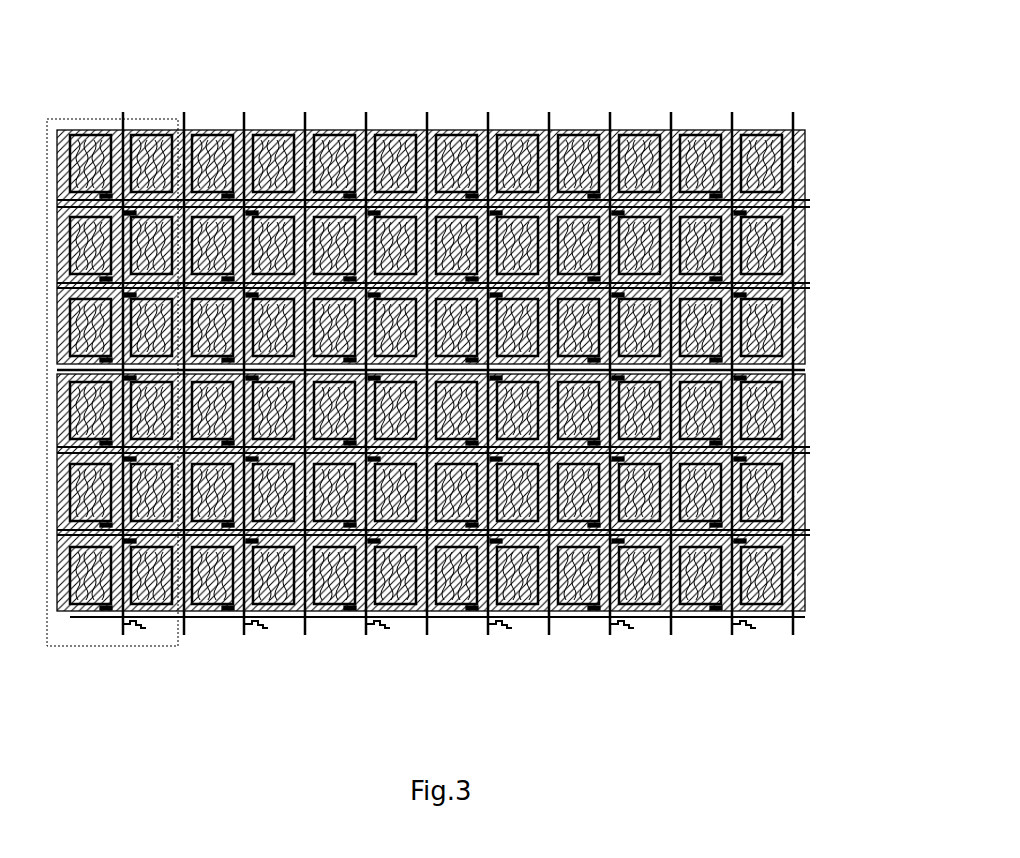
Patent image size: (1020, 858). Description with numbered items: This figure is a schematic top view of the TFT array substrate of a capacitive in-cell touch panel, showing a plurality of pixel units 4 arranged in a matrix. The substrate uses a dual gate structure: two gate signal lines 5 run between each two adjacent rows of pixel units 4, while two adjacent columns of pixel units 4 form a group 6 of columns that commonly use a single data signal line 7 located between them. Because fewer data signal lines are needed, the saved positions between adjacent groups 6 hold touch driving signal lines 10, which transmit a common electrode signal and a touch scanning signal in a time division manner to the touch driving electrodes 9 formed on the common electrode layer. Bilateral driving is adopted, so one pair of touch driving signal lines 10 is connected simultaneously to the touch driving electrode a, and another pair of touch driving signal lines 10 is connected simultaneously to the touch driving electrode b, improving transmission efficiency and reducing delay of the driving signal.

The pixel unit 4 is at (763, 610).
The gate signal line 5 is at (812, 285).
The group of columns of pixel units 6 is at (123, 646).
The data signal line 7 is at (123, 110).
The touch driving electrode 9 is at (880, 202).
The touch driving signal line 10 is at (200, 85).
The touch driving electrode a is at (803, 250).
The touch driving electrode b is at (802, 493).